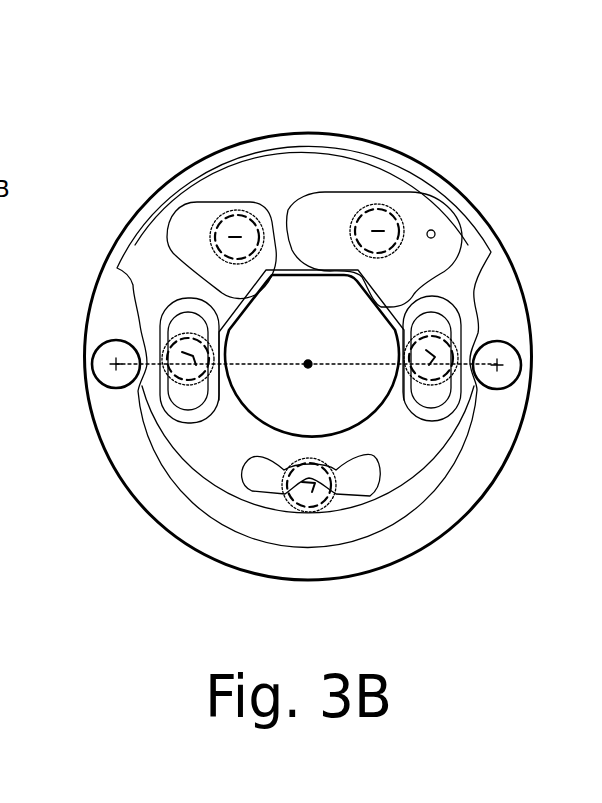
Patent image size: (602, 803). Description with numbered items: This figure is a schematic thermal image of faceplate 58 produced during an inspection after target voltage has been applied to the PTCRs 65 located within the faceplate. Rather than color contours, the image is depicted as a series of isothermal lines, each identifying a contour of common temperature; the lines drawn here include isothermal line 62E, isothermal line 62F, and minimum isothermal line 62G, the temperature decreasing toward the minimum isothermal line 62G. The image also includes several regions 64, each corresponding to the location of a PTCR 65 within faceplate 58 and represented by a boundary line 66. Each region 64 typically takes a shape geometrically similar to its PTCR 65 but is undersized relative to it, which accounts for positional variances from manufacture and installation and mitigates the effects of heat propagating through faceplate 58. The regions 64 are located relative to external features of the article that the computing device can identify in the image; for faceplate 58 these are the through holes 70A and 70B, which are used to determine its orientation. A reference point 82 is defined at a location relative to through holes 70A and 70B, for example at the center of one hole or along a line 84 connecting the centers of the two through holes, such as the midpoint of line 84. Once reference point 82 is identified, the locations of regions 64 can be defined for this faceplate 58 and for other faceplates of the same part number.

The faceplate 58 is at (168, 136).
The isothermal line 62E is at (213, 203).
The isothermal line 62F is at (163, 205).
The minimum isothermal line 62G is at (143, 222).
The region 64 is at (235, 236).
The PTCR 65 is at (243, 211).
The boundary line 66 is at (253, 212).
The through hole 70A is at (102, 342).
The through hole 70B is at (517, 347).
The reference point 82 is at (311, 361).
The line 84 is at (282, 367).